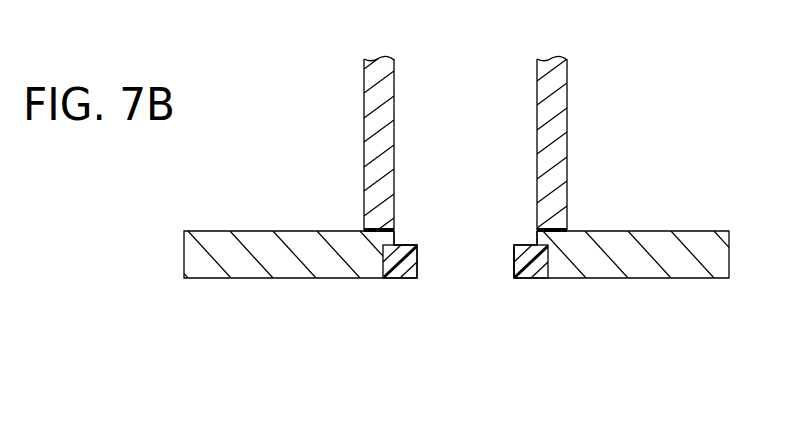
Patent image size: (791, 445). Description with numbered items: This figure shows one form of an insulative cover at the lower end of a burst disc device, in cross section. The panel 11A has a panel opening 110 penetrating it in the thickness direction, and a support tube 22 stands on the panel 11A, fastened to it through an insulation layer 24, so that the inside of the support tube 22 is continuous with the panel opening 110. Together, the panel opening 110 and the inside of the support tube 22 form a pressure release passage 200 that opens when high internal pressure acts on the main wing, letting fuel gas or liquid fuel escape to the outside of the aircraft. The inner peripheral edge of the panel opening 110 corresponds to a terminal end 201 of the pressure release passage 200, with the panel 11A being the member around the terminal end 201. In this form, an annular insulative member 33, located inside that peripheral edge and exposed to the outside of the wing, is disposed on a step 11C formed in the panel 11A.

The pressure release passage 200 is at (483, 108).
The support tube 22 is at (567, 143).
The insulation layer 24 is at (548, 229).
The step 11C is at (393, 252).
The terminal end 201 is at (417, 262).
The insulative member 33 is at (523, 278).
The panel opening 110 is at (514, 263).
The panel 11A is at (667, 278).